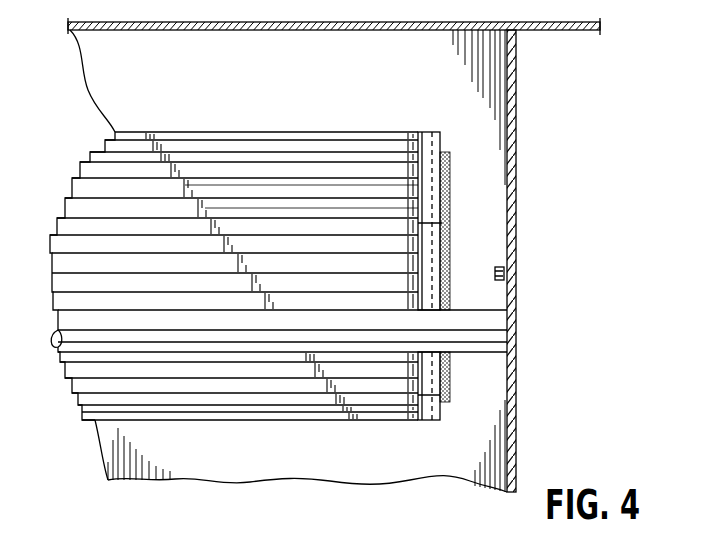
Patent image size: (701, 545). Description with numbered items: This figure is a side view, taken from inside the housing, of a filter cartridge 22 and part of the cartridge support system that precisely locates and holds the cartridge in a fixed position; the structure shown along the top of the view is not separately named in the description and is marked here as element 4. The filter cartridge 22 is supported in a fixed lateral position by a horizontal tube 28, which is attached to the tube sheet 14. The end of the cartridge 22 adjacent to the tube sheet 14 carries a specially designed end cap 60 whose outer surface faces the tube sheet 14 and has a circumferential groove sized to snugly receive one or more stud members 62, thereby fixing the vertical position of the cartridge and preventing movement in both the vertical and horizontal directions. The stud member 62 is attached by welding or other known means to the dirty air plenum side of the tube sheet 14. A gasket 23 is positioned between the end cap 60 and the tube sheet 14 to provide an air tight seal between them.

The top plate 4 is at (197, 31).
The filter cartridge 22 is at (165, 124).
The end cap 60 is at (424, 132).
The gasket 23 is at (452, 188).
The tube sheet 14 is at (517, 186).
The stud member 62 is at (494, 277).
The horizontal tube 28 is at (505, 328).